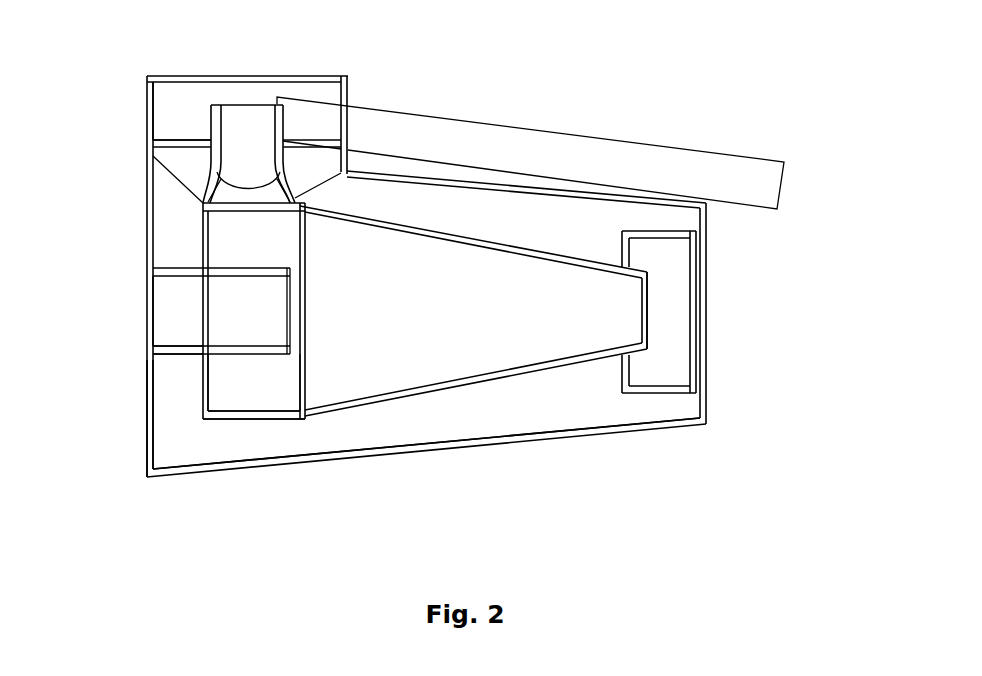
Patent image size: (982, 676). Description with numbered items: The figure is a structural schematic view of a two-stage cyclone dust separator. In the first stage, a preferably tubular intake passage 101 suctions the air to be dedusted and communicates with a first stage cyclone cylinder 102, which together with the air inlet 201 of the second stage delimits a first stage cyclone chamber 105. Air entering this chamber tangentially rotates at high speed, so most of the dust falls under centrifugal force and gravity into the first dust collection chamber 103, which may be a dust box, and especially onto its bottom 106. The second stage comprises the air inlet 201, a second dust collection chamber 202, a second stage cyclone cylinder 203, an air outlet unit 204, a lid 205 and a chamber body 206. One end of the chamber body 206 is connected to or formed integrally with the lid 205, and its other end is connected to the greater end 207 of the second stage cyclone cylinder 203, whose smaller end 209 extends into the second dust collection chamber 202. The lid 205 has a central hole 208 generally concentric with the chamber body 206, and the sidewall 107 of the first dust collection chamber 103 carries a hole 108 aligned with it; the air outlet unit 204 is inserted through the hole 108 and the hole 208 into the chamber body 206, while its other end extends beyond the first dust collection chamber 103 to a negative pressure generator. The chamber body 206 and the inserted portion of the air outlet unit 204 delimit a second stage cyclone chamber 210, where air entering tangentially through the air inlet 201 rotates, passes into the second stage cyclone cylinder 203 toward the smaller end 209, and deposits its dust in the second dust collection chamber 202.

The intake passage 101 is at (617, 136).
The first stage cyclone cylinder 102 is at (351, 77).
The first dust collection chamber 103 is at (359, 463).
The first stage cyclone chamber 105 is at (195, 124).
The bottom of the first dust collection chamber 106 is at (556, 432).
The sidewall of the first dust collection chamber 107 is at (146, 408).
The hole 108 is at (147, 318).
The air inlet 201 is at (208, 135).
The second dust collection chamber 202 is at (667, 397).
The second stage cyclone cylinder 203 is at (449, 392).
The air outlet unit 204 is at (177, 354).
The lid 205 is at (204, 240).
The chamber body 206 is at (246, 421).
The greater end of the second stage cyclone cylinder 207 is at (320, 419).
The hole 208 is at (203, 312).
The smaller end of the second stage cyclone cylinder 209 is at (635, 297).
The second stage cyclone chamber 210 is at (240, 388).